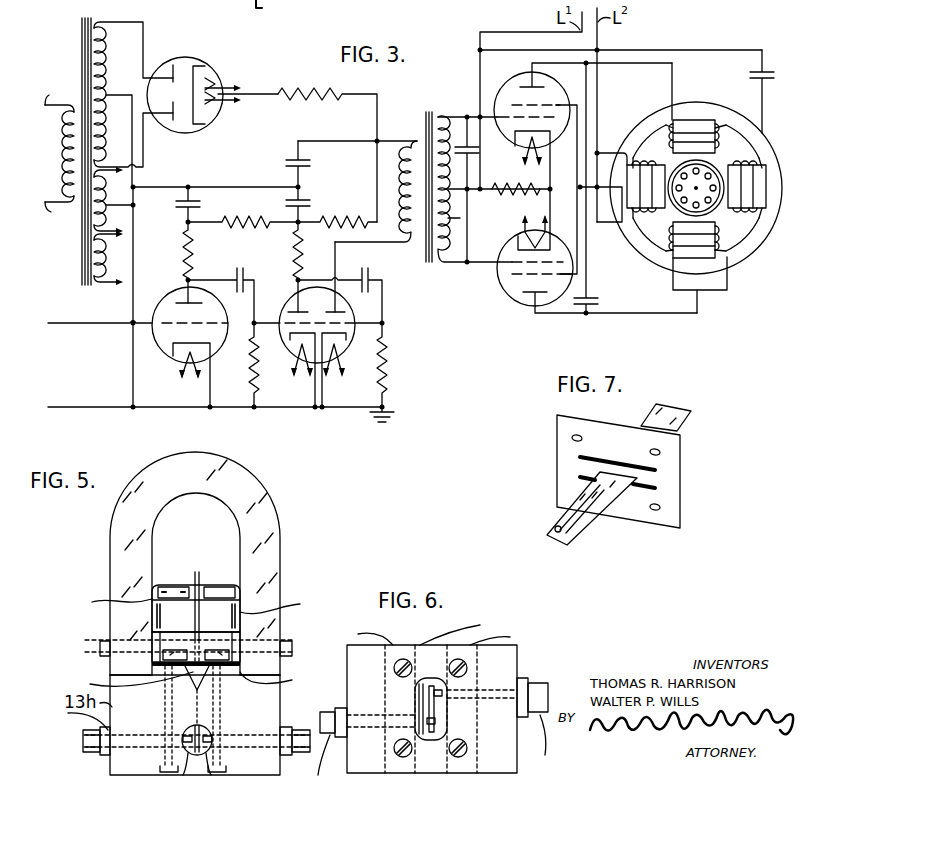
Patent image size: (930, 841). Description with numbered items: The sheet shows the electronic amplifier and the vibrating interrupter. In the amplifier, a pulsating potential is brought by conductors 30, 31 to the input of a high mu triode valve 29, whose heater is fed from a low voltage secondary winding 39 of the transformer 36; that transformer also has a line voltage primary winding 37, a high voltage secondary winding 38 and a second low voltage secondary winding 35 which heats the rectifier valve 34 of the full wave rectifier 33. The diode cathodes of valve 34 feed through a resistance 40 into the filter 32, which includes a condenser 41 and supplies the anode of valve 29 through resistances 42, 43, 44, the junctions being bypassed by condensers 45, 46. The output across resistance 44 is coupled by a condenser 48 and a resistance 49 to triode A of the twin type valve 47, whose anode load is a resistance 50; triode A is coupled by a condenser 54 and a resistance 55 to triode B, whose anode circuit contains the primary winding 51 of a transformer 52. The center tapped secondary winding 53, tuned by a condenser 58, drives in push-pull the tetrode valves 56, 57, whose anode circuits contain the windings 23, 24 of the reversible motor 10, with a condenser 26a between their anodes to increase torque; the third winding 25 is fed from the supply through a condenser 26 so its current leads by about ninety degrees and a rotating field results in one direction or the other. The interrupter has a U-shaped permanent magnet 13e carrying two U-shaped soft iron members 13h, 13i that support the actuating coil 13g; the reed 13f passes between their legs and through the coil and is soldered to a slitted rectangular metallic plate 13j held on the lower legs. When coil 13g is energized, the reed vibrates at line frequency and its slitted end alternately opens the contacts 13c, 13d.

In FIG. 3, the reversible motor 10 is at (710, 196).
In FIG. 3, the motor winding 23 is at (697, 119).
In FIG. 3, the motor winding 24 is at (672, 262).
In FIG. 3, the motor winding 25 is at (619, 222).
In FIG. 3, the condenser 26 is at (770, 80).
In FIG. 3, the condenser 26a is at (599, 301).
In FIG. 3, the electronic valve 29 is at (172, 356).
In FIG. 3, the conductor 30 is at (50, 323).
In FIG. 3, the conductor 31 is at (50, 407).
In FIG. 3, the filter 32 is at (250, 178).
In FIG. 3, the rectifier 33 is at (212, 68).
In FIG. 3, the rectifier valve 34 is at (198, 60).
In FIG. 3, the low voltage secondary winding 35 is at (108, 218).
In FIG. 3, the transformer 36 is at (82, 47).
In FIG. 3, the line voltage primary winding 37 is at (66, 156).
In FIG. 3, the high voltage secondary winding 38 is at (105, 44).
In FIG. 3, the low voltage secondary winding 39 is at (108, 262).
In FIG. 3, the resistance 40 is at (323, 99).
In FIG. 3, the condenser 41 is at (310, 163).
In FIG. 3, the resistance 42 is at (352, 206).
In FIG. 3, the resistance 43 is at (249, 204).
In FIG. 3, the resistance 44 is at (194, 246).
In FIG. 3, the condenser 45 is at (310, 205).
In FIG. 3, the condenser 46 is at (200, 208).
In FIG. 3, the twin type valve 47 is at (349, 334).
In FIG. 3, the condenser 48 is at (247, 267).
In FIG. 3, the resistance 49 is at (256, 377).
In FIG. 3, the resistance 50 is at (302, 262).
In FIG. 3, the primary winding 51 is at (406, 232).
In FIG. 3, the transformer 52 is at (427, 112).
In FIG. 3, the secondary winding 53 is at (452, 216).
In FIG. 3, the condenser 54 is at (369, 267).
In FIG. 3, the resistance 55 is at (386, 354).
In FIG. 3, the electronic valve 56 is at (514, 76).
In FIG. 3, the electronic valve 57 is at (503, 293).
In FIG. 3, the condenser 58 is at (479, 152).
In FIG. 5, the contact 13c is at (188, 770).
In FIG. 6, the contact 13c is at (428, 715).
In FIG. 5, the contact 13d is at (207, 770).
In FIG. 6, the contact 13d is at (442, 689).
In FIG. 5, the U-shaped permanent magnet 13e is at (276, 512).
In FIG. 5, the deflecting member or reed 13f is at (196, 578).
In FIG. 7, the deflecting member or reed 13f is at (604, 507).
In FIG. 5, the actuating coil 13g is at (239, 609).
In FIG. 5, the U-shaped soft iron member 13h is at (165, 586).
In FIG. 5, the U-shaped soft iron member 13i is at (218, 586).
In FIG. 5, the rectangular metallic plate 13j is at (280, 682).
In FIG. 7, the rectangular metallic plate 13j is at (558, 456).